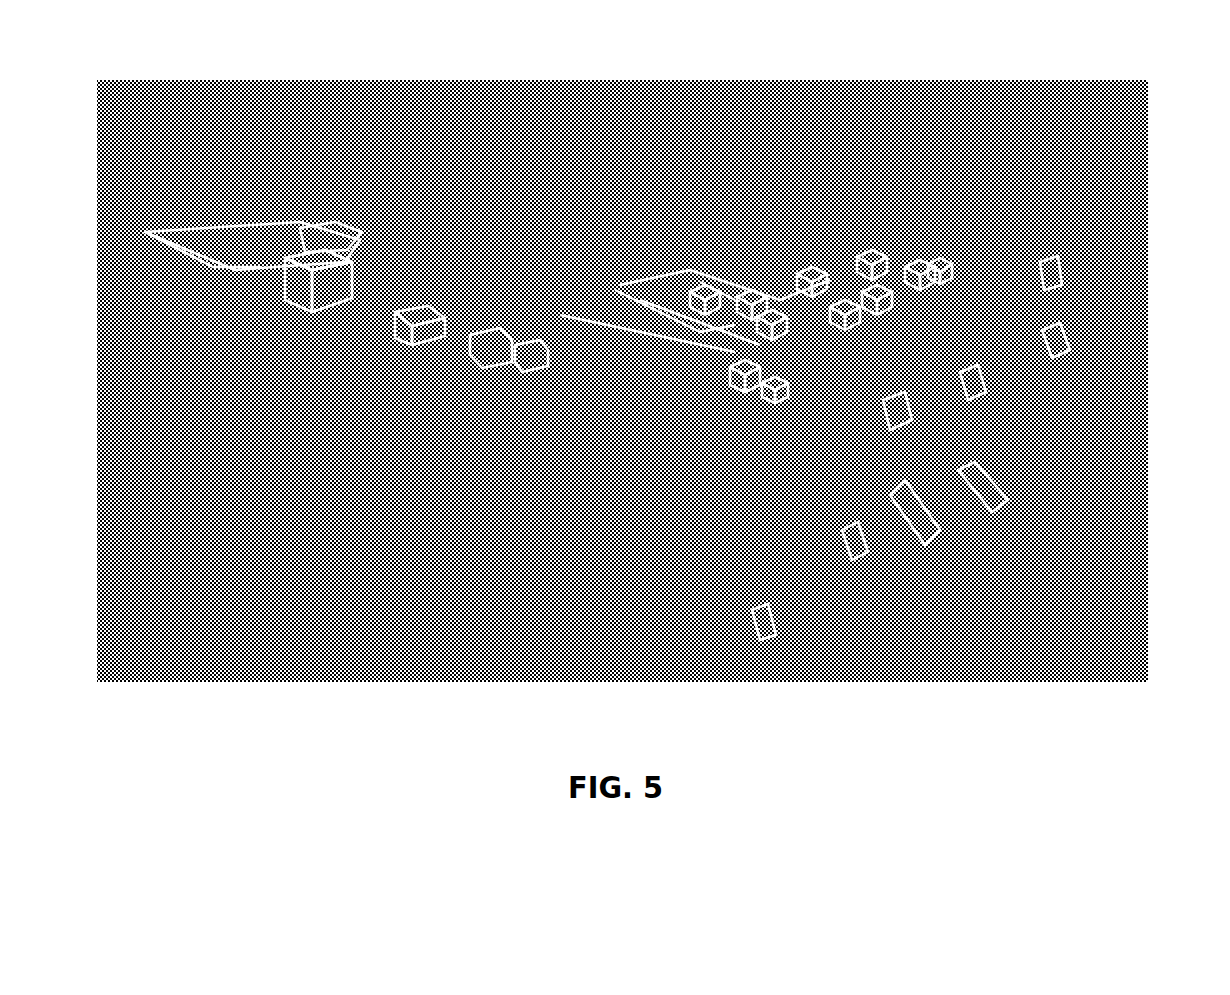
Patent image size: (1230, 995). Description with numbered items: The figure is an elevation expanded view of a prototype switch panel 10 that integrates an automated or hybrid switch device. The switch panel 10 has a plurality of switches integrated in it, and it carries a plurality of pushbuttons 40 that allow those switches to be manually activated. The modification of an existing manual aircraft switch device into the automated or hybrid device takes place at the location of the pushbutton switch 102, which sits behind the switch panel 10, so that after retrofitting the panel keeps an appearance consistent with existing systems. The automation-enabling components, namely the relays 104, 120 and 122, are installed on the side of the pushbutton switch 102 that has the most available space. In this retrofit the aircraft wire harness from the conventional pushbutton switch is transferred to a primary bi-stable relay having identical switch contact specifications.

The switch panel 10 is at (1045, 307).
The pushbuttons 40 is at (897, 417).
The pushbutton switch 102 is at (425, 332).
The relay 104 is at (347, 238).
The relay 120 is at (343, 225).
The relay 122 is at (343, 225).